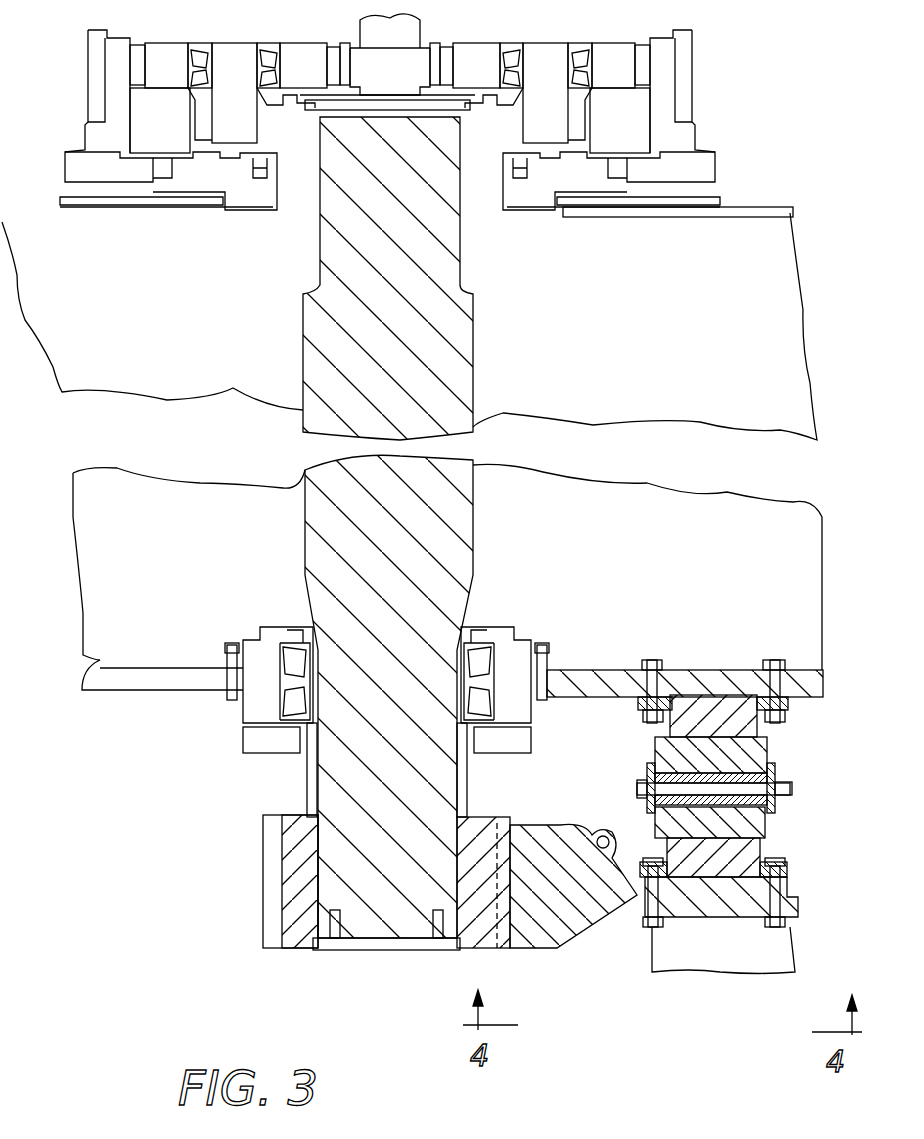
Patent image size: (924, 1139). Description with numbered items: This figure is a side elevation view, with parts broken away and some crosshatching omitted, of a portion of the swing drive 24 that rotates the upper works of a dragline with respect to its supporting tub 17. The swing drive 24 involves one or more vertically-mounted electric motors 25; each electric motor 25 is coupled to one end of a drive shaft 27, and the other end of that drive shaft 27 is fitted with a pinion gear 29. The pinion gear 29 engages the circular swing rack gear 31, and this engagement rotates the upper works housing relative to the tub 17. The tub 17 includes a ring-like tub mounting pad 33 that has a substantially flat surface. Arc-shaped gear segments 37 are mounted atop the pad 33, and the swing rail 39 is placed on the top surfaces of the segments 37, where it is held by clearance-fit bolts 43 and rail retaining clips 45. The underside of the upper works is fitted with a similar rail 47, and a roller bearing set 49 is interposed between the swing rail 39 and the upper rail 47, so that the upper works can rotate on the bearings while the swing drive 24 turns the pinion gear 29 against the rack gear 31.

The tub 17 is at (787, 952).
The swing drive 24 is at (96, 437).
The electric motor 25 is at (675, 88).
The drive shaft 27 is at (473, 345).
The pinion gear 29 is at (272, 938).
The swing rack gear 31 is at (586, 937).
The tub mounting pad 33 is at (797, 910).
The gear segment 37 is at (572, 826).
The swing rail 39 is at (760, 840).
The clearance-fit bolt 43 is at (648, 893).
The rail retaining clip 45 is at (788, 868).
The rail 47 is at (757, 737).
The roller bearing set 49 is at (768, 755).